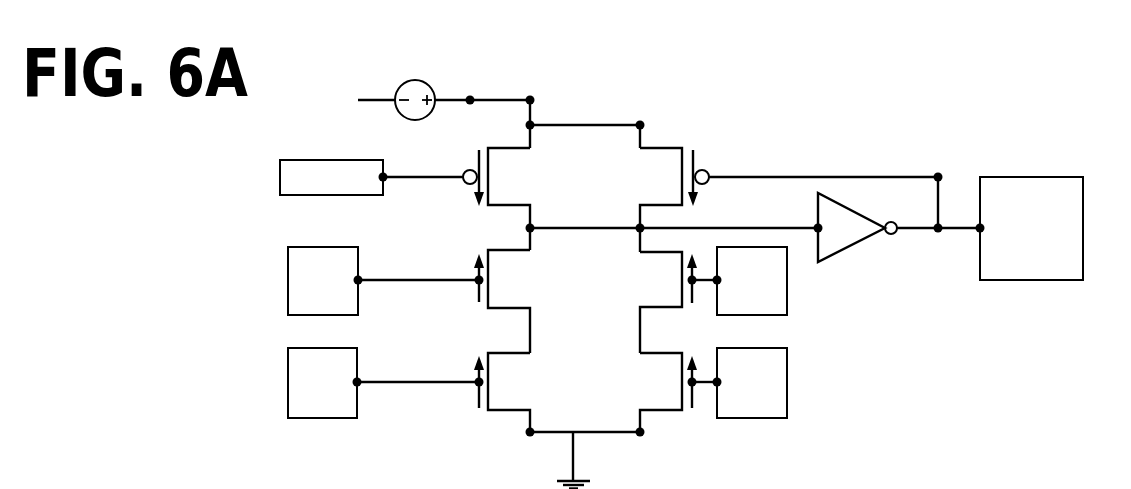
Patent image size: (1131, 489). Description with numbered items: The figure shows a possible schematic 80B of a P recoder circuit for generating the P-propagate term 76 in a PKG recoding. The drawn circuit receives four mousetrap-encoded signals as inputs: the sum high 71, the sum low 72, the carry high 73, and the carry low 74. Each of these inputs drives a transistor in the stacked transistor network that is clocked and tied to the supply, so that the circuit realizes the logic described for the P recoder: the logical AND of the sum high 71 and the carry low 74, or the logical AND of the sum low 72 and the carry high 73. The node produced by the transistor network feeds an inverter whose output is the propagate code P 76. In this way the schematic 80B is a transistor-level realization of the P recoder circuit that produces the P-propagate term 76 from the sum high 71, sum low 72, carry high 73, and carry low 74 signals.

The sum high 71 is at (311, 303).
The sum low 72 is at (740, 303).
The carry high 73 is at (740, 405).
The carry low 74 is at (310, 405).
The propagate code P 76 is at (1020, 253).
The schematic of P recoder circuit 80B is at (757, 133).